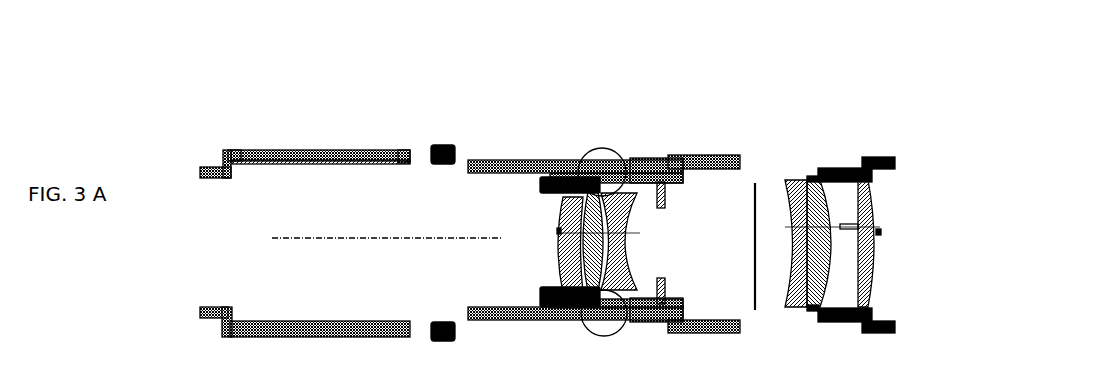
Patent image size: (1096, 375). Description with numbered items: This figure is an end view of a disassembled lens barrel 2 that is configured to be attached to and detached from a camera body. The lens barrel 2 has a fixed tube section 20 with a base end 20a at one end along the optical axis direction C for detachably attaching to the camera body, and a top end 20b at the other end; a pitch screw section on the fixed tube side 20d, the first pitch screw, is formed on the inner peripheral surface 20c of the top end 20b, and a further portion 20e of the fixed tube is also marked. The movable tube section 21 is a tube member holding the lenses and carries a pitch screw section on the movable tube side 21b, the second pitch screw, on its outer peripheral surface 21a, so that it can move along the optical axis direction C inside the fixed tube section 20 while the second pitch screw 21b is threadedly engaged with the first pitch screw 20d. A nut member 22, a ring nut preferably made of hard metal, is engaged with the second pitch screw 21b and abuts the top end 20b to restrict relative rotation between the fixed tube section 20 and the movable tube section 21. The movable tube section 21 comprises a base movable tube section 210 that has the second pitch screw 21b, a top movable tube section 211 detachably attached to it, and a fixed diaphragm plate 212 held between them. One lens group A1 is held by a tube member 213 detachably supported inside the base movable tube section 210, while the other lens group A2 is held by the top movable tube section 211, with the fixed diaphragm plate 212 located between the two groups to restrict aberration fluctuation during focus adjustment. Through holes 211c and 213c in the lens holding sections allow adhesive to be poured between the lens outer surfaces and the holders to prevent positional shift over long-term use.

The lens barrel 2 is at (228, 90).
The fixed tube section 20 is at (291, 149).
The base end 20a is at (203, 167).
The top end 20b is at (410, 150).
The inner peripheral surface 20c is at (247, 167).
The pitch screw section on the fixed tube side 20d is at (340, 167).
The frame step portion 20e is at (235, 150).
The movable tube section 21 is at (825, 88).
The outer peripheral surface 21a is at (682, 154).
The pitch screw section on the movable tube side 21b is at (510, 160).
The nut member 22 is at (443, 144).
The base movable tube section 210 is at (712, 153).
The top movable tube section 211 is at (838, 168).
The through hole 211c is at (813, 180).
The fixed diaphragm plate 212 is at (756, 197).
The tube member 213 is at (543, 287).
The through hole 213c is at (622, 156).
The lens group A1 is at (557, 230).
The lens group A2 is at (882, 232).
The optical axis direction C is at (333, 238).